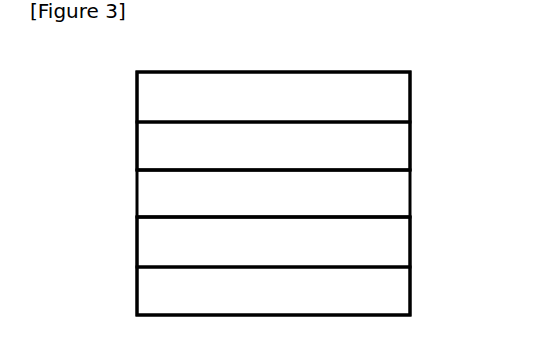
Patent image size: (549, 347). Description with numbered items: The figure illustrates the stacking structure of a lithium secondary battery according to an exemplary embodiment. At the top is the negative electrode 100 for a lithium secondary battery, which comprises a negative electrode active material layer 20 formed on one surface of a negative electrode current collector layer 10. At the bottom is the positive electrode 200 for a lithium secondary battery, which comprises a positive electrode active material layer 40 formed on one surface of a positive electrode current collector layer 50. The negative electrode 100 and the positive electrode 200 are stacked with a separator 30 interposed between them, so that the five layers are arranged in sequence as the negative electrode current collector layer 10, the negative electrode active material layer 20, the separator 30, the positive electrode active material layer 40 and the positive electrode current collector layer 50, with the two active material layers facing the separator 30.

The negative electrode current collector layer 10 is at (273, 97).
The negative electrode active material layer 20 is at (273, 146).
The separator 30 is at (273, 193).
The positive electrode active material layer 40 is at (273, 242).
The positive electrode current collector layer 50 is at (273, 291).
The negative electrode for a lithium secondary battery 100 is at (422, 75).
The positive electrode for a lithium secondary battery 200 is at (425, 218).